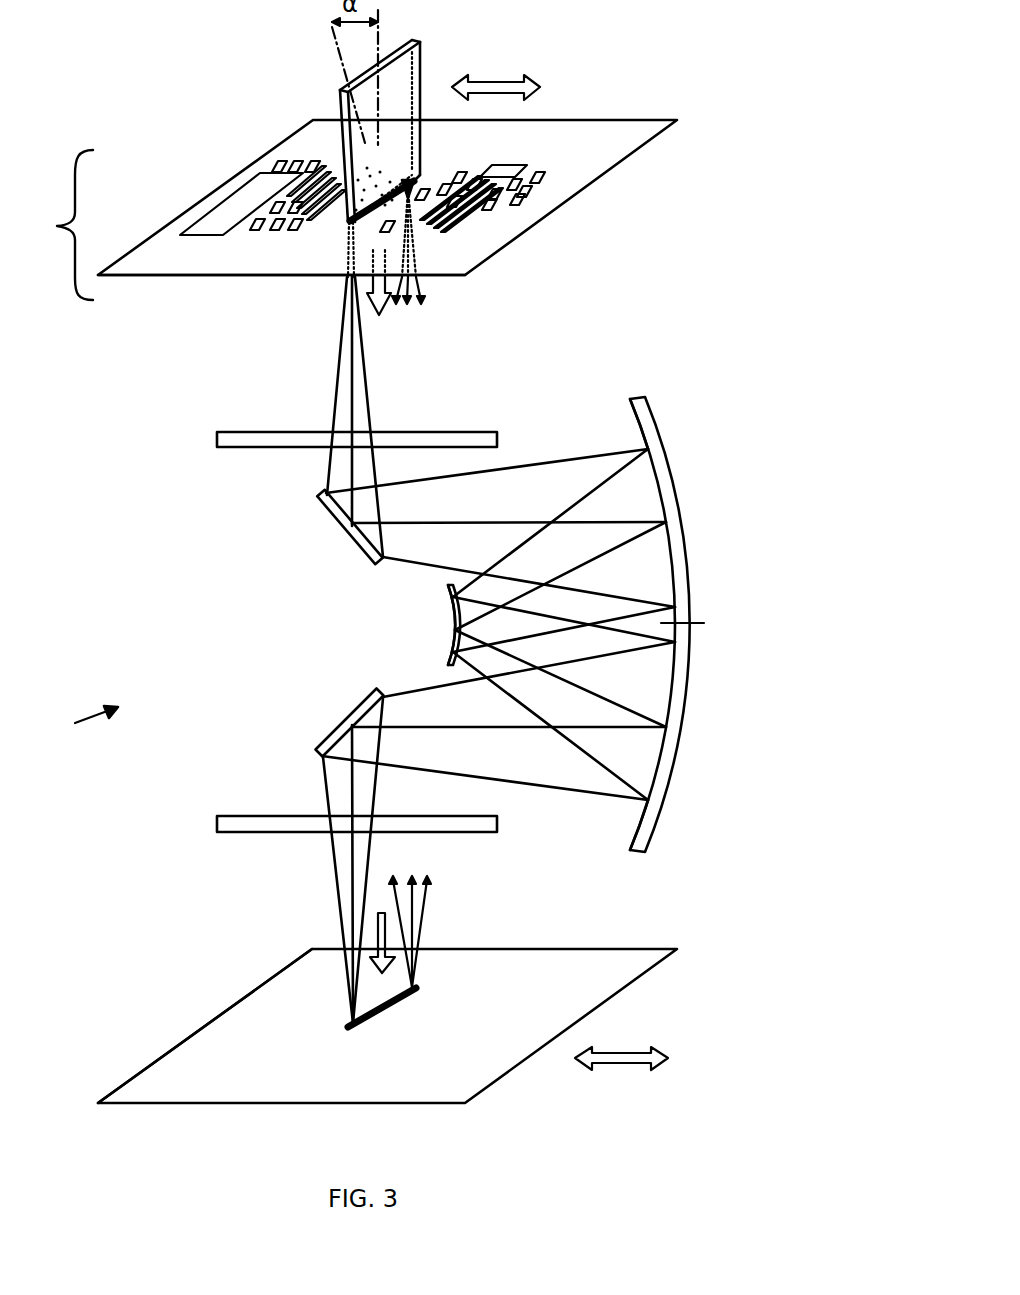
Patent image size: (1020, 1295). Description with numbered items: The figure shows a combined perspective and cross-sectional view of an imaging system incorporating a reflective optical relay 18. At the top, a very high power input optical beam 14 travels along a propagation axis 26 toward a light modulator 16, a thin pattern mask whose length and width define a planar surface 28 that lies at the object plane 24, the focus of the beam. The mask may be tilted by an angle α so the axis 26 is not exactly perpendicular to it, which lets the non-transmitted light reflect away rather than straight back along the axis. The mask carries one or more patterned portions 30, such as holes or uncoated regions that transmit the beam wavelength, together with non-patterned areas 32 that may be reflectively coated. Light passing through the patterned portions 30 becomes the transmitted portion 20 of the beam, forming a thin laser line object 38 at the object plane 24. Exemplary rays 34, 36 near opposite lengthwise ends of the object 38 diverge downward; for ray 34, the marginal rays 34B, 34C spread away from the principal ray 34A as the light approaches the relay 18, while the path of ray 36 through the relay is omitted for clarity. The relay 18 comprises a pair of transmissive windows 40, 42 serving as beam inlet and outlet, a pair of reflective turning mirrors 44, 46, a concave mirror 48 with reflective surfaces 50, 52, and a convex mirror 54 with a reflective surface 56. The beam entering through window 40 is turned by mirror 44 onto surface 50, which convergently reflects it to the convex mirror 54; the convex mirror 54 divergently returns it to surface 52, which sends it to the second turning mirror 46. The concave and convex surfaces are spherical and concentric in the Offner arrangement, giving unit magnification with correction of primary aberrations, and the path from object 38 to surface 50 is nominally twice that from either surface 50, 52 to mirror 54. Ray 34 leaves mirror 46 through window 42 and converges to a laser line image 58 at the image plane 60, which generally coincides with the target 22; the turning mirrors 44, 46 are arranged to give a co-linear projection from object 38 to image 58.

The input optical beam 14 is at (397, 85).
The light modulator 16 is at (55, 225).
The optical relay 18 is at (80, 724).
The transmitted portion 20 is at (388, 311).
The target 22 is at (553, 1007).
The object plane 24 is at (148, 277).
The propagation axis 26 is at (380, 52).
The planar surface 28 is at (583, 165).
The patterned portion 30 is at (500, 205).
The non-patterned area 32 is at (440, 215).
The exemplary ray 34 is at (341, 389).
The principal ray 34A is at (348, 392).
The marginal ray 34B is at (343, 320).
The marginal ray 34C is at (363, 357).
The exemplary ray 36 is at (438, 297).
The laser line object 38 is at (395, 190).
The transmissive window 40 is at (280, 430).
The transmissive window 42 is at (277, 815).
The turning mirror 44 is at (348, 538).
The turning mirror 46 is at (353, 708).
The concave mirror 48 is at (629, 607).
The reflective surface 50 is at (660, 490).
The reflective surface 52 is at (652, 756).
The convex mirror 54 is at (412, 622).
The reflective surface 56 is at (447, 598).
The laser line image 58 is at (400, 1003).
The image plane 60 is at (217, 1018).